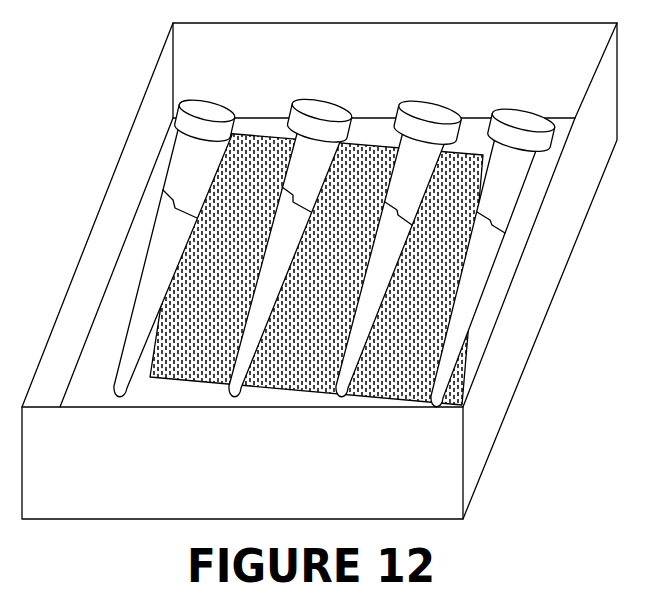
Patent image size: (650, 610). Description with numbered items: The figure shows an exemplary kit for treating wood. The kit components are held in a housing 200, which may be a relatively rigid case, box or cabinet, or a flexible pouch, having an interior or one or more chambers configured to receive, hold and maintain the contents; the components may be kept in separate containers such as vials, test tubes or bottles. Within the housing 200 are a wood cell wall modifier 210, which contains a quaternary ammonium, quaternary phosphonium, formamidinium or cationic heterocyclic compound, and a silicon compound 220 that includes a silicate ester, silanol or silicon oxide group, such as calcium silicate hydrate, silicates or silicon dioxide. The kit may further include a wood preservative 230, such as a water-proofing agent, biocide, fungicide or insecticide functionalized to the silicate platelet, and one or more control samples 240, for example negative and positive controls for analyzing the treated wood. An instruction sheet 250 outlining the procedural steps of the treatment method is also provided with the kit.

The housing 200 is at (89, 279).
The wood cell wall modifier 210 is at (181, 239).
The silicon compound 220 is at (256, 291).
The wood preservative 230 is at (373, 258).
The control sample 240 is at (456, 286).
The instruction sheet 250 is at (198, 352).